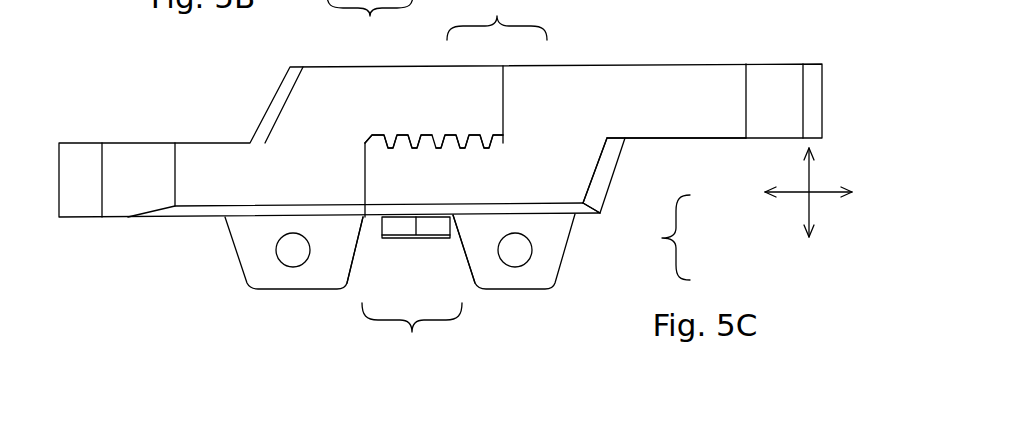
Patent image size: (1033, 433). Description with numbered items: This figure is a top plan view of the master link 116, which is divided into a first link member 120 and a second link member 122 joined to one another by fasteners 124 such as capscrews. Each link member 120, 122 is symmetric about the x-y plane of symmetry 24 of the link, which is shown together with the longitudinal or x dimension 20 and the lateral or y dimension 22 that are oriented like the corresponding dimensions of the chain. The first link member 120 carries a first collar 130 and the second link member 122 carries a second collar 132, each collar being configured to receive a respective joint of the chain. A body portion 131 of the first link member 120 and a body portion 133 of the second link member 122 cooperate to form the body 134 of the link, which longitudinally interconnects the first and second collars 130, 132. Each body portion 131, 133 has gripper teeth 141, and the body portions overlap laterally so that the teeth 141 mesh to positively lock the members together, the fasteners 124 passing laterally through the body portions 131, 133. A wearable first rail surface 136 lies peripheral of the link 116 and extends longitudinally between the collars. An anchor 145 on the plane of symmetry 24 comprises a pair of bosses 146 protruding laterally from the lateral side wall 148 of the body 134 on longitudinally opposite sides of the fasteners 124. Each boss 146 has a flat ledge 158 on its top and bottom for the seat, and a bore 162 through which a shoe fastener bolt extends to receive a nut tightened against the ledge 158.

In FIG. 5C, the longitudinal dimension 20 is at (791, 194).
In FIG. 5C, the lateral dimension 22 is at (813, 207).
In FIG. 5C, the x-y plane of symmetry 24 is at (662, 238).
In FIG. 5C, the master link 116 is at (144, 133).
In FIG. 5C, the first link member 120 is at (215, 157).
In FIG. 5C, the second link member 122 is at (678, 77).
In FIG. 5C, the fasteners 124 is at (382, 226).
In FIG. 5C, the first collar 130 is at (78, 207).
In FIG. 5C, the body portion of first link member 131 is at (458, 80).
In FIG. 5C, the second collar 132 is at (777, 82).
In FIG. 5C, the body portion of second link member 133 is at (532, 80).
In FIG. 5B, the body 134 is at (370, 19).
In FIG. 5C, the body 134 is at (497, 16).
In FIG. 5C, the first rail surface 136 is at (635, 100).
In FIG. 5C, the gripper teeth 141 is at (437, 133).
In FIG. 5C, the anchor 145 is at (412, 330).
In FIG. 5C, the bosses 146 is at (347, 250).
In FIG. 5C, the lateral side wall 148 is at (583, 215).
In FIG. 5C, the flat ledge 158 is at (247, 265).
In FIG. 5C, the bore 162 is at (298, 257).